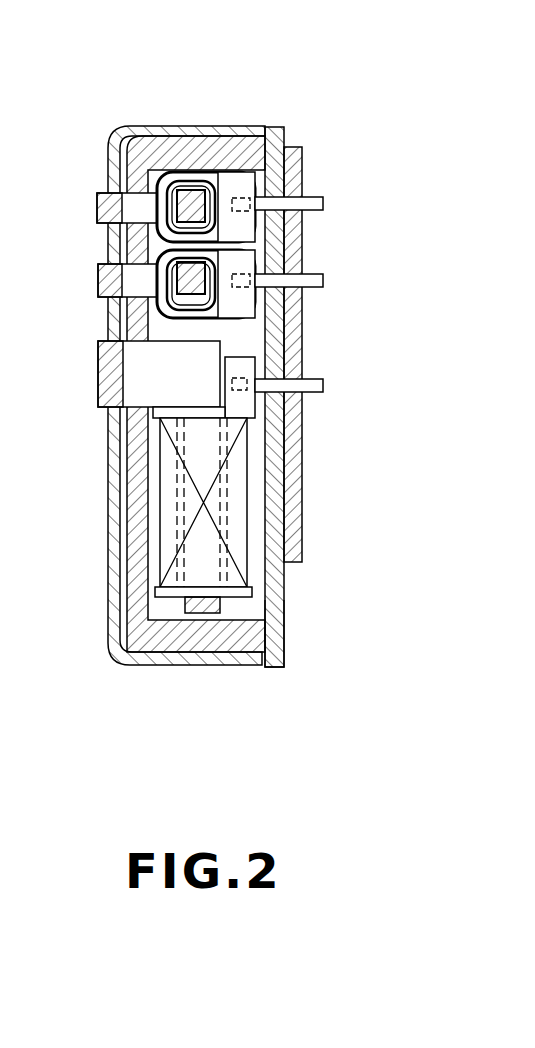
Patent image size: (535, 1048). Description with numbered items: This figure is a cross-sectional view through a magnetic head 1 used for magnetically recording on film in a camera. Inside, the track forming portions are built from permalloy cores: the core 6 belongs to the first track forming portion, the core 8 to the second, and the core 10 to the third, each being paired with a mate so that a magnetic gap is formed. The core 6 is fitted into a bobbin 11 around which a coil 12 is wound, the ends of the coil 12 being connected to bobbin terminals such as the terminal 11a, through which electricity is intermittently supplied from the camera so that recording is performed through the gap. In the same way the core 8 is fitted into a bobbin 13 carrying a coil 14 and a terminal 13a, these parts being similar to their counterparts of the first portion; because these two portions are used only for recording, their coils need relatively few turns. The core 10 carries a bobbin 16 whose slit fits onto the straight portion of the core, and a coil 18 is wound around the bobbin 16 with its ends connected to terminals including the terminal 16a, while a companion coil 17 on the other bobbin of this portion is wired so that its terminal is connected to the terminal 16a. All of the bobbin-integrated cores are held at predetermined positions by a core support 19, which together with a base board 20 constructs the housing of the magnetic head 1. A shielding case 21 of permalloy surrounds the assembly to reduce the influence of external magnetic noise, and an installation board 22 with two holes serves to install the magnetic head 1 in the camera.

The magnetic head 1 is at (297, 72).
The core 6 is at (97, 203).
The core 8 is at (98, 284).
The core 10 is at (98, 358).
The bobbin 11 is at (283, 142).
The terminal 11a is at (310, 203).
The coil 12 is at (232, 172).
The bobbin 13 is at (236, 263).
The terminal 13a is at (323, 281).
The coil 14 is at (258, 228).
The bobbin 16 is at (243, 362).
The terminal 16a is at (323, 386).
The coil 17 is at (250, 484).
The coil 18 is at (237, 513).
The core support 19 is at (183, 135).
The base board 20 is at (282, 593).
The shielding case 21 is at (123, 130).
The installation board 22 is at (302, 432).